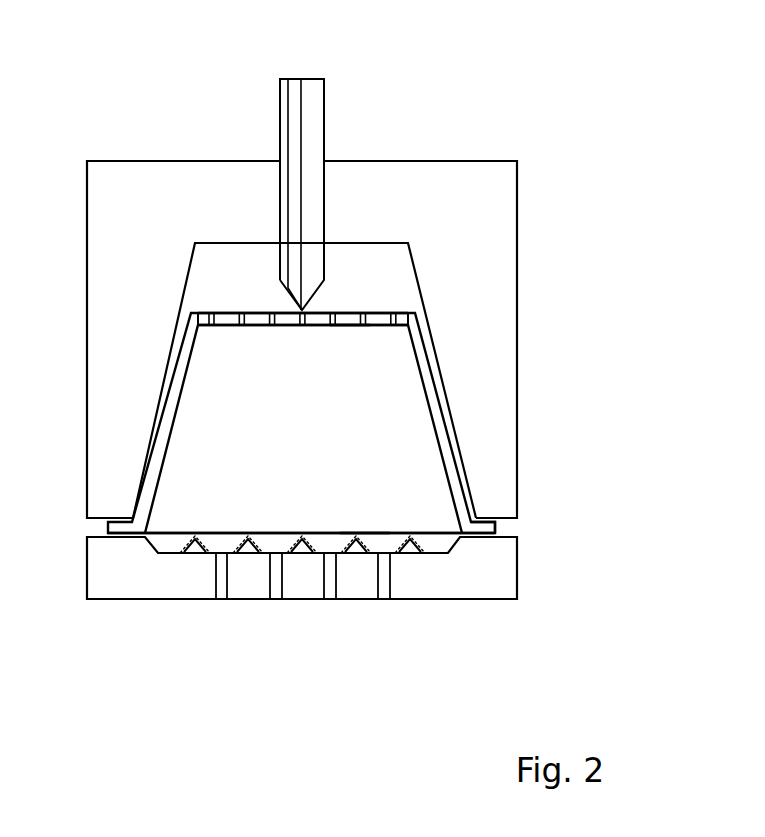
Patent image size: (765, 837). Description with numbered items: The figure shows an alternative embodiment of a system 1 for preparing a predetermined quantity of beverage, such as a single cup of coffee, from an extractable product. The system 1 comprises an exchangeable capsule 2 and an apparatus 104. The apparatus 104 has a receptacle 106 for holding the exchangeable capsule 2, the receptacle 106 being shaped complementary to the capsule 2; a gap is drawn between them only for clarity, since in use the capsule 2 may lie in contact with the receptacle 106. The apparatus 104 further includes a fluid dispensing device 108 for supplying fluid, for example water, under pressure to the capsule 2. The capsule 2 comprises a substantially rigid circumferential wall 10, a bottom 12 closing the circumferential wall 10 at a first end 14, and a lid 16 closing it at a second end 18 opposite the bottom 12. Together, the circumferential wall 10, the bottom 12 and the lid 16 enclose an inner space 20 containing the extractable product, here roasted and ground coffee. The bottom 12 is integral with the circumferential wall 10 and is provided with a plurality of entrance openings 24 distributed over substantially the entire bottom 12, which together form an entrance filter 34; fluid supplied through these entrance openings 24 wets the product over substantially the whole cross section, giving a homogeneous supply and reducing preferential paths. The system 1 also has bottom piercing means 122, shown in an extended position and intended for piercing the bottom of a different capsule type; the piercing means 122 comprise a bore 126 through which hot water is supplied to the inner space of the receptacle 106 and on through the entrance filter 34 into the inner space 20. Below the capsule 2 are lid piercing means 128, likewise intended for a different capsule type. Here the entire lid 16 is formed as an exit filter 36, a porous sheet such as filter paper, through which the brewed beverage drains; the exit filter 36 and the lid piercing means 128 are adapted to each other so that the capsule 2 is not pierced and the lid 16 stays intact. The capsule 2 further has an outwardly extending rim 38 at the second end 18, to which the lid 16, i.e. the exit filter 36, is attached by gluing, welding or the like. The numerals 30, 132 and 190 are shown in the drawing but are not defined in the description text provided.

The system 1 is at (347, 343).
The exchangeable capsule 2 is at (445, 423).
The circumferential wall 10 is at (447, 455).
The bottom 12 is at (380, 318).
The first end 14 is at (408, 323).
The lid 16 is at (437, 535).
The second end 18 is at (487, 519).
The inner space 20 is at (241, 374).
The entrance openings 24 is at (297, 308).
The nozzle 30 is at (365, 522).
The entrance filter 34 is at (349, 331).
The exit filter 36 is at (380, 535).
The outwardly extending rim 38 is at (494, 527).
The apparatus 104 is at (522, 196).
The receptacle 106 is at (518, 268).
The fluid dispensing device 108 is at (325, 85).
The bottom piercing means 122 is at (325, 146).
The bore 126 is at (297, 78).
The lid piercing means 128 is at (193, 551).
The channel 132 is at (221, 595).
The base 190 is at (112, 568).